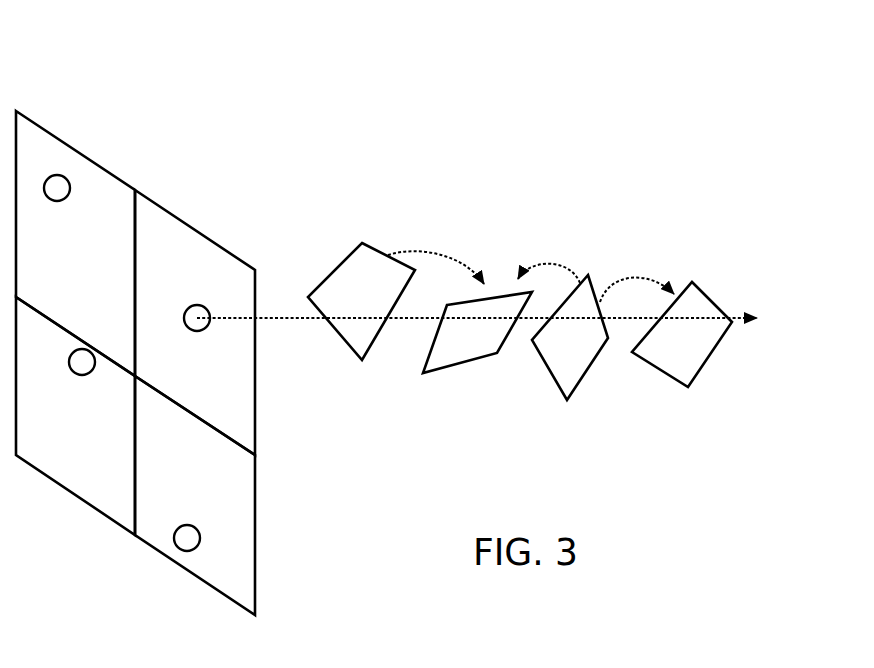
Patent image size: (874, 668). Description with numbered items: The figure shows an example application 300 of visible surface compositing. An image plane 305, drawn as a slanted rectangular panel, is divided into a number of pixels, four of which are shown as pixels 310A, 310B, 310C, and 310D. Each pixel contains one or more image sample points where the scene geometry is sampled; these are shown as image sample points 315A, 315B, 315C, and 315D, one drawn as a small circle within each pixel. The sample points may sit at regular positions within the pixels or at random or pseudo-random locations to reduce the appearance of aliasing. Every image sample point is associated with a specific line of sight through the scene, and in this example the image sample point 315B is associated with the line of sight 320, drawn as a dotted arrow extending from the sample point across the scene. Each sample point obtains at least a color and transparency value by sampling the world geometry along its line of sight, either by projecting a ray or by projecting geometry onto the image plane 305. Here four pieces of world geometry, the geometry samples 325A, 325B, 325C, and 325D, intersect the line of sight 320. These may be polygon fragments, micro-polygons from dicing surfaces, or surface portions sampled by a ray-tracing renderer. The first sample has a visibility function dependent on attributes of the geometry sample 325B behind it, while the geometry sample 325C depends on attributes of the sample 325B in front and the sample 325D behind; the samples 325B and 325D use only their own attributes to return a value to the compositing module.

The example application 300 is at (183, 46).
The image plane 305 is at (135, 355).
The pixel 310A is at (107, 303).
The pixel 310B is at (245, 396).
The pixel 310C is at (102, 463).
The pixel 310D is at (233, 463).
The image sample point 315A is at (55, 201).
The image sample point 315B is at (193, 305).
The image sample point 315C is at (82, 375).
The image sample point 315D is at (187, 525).
The line of sight 320 is at (740, 320).
The geometry sample 325A is at (361, 301).
The geometry sample 325B is at (477, 332).
The geometry sample 325C is at (570, 337).
The geometry sample 325D is at (682, 334).